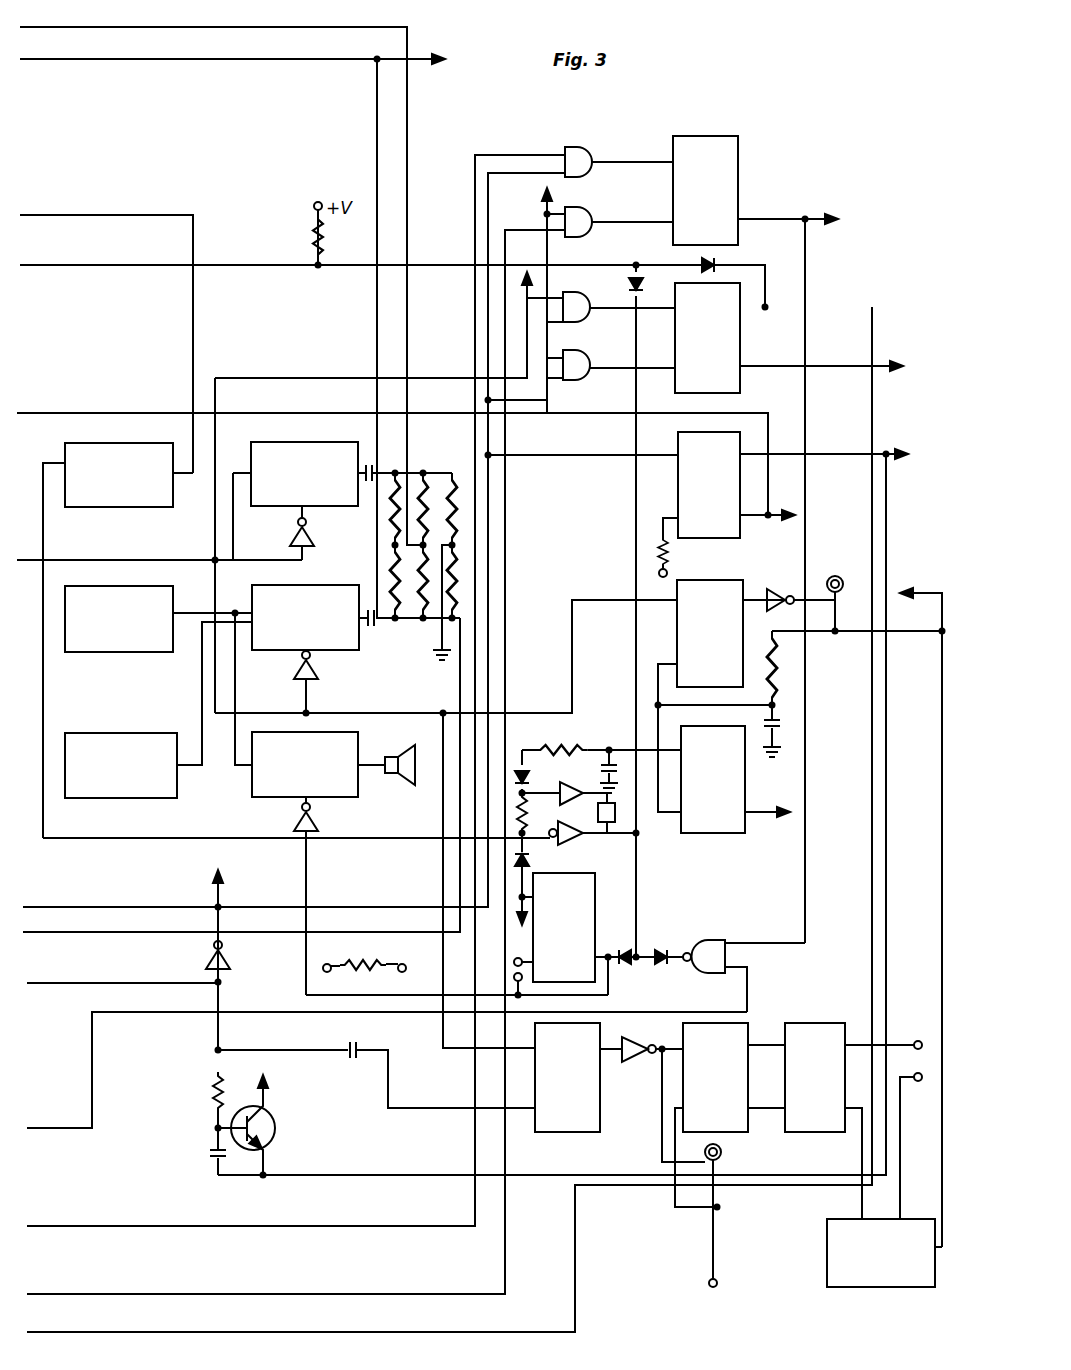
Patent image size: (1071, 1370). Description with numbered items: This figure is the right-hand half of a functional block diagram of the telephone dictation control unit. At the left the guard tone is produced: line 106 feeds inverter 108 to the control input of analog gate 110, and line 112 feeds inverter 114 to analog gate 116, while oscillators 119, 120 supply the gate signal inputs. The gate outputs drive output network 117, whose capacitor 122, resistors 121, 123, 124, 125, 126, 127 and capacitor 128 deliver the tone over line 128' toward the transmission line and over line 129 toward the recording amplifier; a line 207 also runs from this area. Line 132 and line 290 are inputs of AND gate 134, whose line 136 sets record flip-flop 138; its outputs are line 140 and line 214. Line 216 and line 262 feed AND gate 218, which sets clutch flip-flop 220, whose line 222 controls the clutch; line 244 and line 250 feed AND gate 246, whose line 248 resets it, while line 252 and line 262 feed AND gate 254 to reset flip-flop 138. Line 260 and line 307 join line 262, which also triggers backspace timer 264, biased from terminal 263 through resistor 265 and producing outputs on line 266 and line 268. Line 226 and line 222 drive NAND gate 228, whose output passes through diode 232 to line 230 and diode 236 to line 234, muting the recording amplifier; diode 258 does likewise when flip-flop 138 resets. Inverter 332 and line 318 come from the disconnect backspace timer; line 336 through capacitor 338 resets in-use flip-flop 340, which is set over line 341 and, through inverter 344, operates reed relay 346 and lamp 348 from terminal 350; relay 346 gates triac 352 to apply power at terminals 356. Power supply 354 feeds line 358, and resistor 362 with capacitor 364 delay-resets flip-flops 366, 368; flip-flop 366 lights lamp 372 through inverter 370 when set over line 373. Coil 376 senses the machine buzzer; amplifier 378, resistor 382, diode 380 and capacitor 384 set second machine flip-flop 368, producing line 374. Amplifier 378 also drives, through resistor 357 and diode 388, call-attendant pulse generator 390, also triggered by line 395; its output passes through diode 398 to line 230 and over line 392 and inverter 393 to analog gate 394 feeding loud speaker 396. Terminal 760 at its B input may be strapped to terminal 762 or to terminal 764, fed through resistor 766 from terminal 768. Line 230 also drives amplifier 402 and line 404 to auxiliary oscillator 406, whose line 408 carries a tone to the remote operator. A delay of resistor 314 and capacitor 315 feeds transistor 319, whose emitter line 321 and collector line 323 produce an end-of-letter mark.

The line 128' is at (235, 286).
The line 129 is at (72, 61).
The line 408 is at (68, 214).
The line 234 is at (60, 265).
The auxiliary oscillator 406 is at (95, 507).
The line 266 is at (52, 413).
The line 132 is at (244, 380).
The line 106 is at (68, 560).
The oscillator 119 is at (98, 586).
The oscillator 120 is at (88, 733).
The line 112 is at (212, 688).
The analog gate 110 is at (281, 440).
The inverter 108 is at (292, 530).
The analog gate 116 is at (320, 590).
The inverter 114 is at (318, 672).
The capacitor 122 is at (376, 466).
The resistor 121 is at (382, 496).
The resistor 124 is at (428, 512).
The resistor 125 is at (456, 522).
The output network 117 is at (386, 550).
The resistor 123 is at (402, 576).
The resistor 127 is at (468, 588).
The resistor 126 is at (420, 590).
The capacitor 128 is at (409, 633).
The audio output line 207 is at (62, 932).
The line 373 is at (568, 682).
The analog gate 394 is at (262, 797).
The inverter 393 is at (318, 822).
The loud speaker 396 is at (404, 790).
The line 404 is at (385, 838).
The line 307 is at (55, 907).
The line 262 is at (340, 907).
The line 260 is at (216, 896).
The inverter 332 is at (220, 960).
The line 318 is at (62, 983).
The line 226 is at (92, 1114).
The resistor 314 is at (209, 1094).
The capacitor 315 is at (208, 1157).
The line 323 is at (272, 1103).
The npn transistor 319 is at (233, 1106).
The line 321 is at (295, 1178).
The line 336 is at (306, 1054).
The capacitor 338 is at (362, 1043).
The line 341 is at (455, 1055).
The line 216 is at (488, 155).
The line 244 is at (504, 235).
The line 214 is at (868, 432).
The AND gate 218 is at (595, 131).
The AND gate 246 is at (595, 192).
The line 250 is at (540, 213).
The line 248 is at (661, 222).
The line 290 is at (521, 284).
The clutch flip-flop 220 is at (734, 153).
The line 222 is at (812, 214).
The diode 236 is at (626, 284).
The diode 258 is at (712, 258).
The AND gate 134 is at (590, 296).
The line 252 is at (562, 337).
The AND gate 254 is at (578, 383).
The record flip-flop 138 is at (735, 296).
The line 136 is at (656, 318).
The line 140 is at (818, 366).
The backspace timer 264 is at (675, 493).
The terminal 263 is at (668, 576).
The resistor 265 is at (656, 540).
The line 268 is at (776, 516).
The message-waiting flip-flop 366 is at (677, 640).
The inverter 370 is at (784, 574).
The indicator lamp 372 is at (854, 556).
The line 358 is at (916, 588).
The resistor 362 is at (780, 676).
The capacitor 364 is at (782, 718).
The second machine flip-flop 368 is at (738, 806).
The line 374 is at (762, 814).
The resistor 382 is at (570, 736).
The capacitor 384 is at (622, 736).
The diode rectifier 380 is at (520, 764).
The resistor 357 is at (528, 822).
The amplifier 378 is at (576, 770).
The coil 376 is at (620, 812).
The amplifier 402 is at (580, 845).
The diode 388 is at (530, 858).
The call-attendant pulse generator 390 is at (609, 879).
The line 395 is at (516, 924).
The terminal 760 is at (512, 973).
The terminal 762 is at (528, 982).
The resistor 766 is at (390, 958).
The terminal 768 is at (325, 975).
The terminal 764 is at (400, 975).
The line 392 is at (612, 978).
The diode 398 is at (628, 948).
The line 230 is at (645, 878).
The diode 232 is at (660, 948).
The NAND gate 228 is at (716, 938).
The in-use flip-flop 340 is at (592, 1132).
The inverter 344 is at (632, 1062).
The reed relay 346 is at (735, 1030).
The lamp 348 is at (722, 1150).
The terminal 350 is at (708, 1281).
The triac 352 is at (818, 1030).
The power input terminals 356 is at (912, 1022).
The power supply 354 is at (848, 1287).